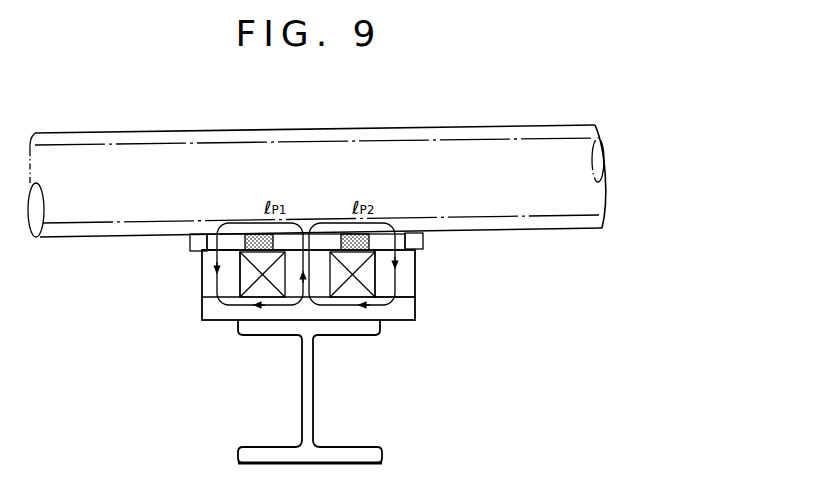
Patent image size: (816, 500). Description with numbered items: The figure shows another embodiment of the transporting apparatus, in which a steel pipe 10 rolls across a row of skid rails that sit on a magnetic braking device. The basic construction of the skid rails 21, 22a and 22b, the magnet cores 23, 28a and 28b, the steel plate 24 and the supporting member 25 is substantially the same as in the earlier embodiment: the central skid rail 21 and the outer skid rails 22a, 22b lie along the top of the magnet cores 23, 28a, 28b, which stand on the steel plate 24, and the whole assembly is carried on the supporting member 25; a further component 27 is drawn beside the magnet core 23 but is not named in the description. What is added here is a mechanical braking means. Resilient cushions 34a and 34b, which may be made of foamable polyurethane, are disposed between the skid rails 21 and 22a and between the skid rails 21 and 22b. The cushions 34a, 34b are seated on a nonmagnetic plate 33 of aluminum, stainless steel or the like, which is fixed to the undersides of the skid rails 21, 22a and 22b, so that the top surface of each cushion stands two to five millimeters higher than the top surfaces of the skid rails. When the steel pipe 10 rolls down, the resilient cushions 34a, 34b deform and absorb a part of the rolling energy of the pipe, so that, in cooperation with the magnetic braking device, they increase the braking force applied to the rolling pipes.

The steel pipe 10 is at (137, 132).
The skid rail 21 is at (322, 242).
The skid rail 22a is at (188, 248).
The skid rail 22b is at (425, 242).
The magnet core 23 is at (320, 290).
The steel plate 24 is at (202, 317).
The supporting member 25 is at (302, 422).
The exciting coil 27 is at (257, 290).
The magnet core 28a is at (203, 280).
The magnet core 28b is at (405, 285).
The nonmagnetic plate 33 is at (238, 247).
The resilient cushion 34a is at (255, 234).
The resilient cushion 34b is at (347, 234).